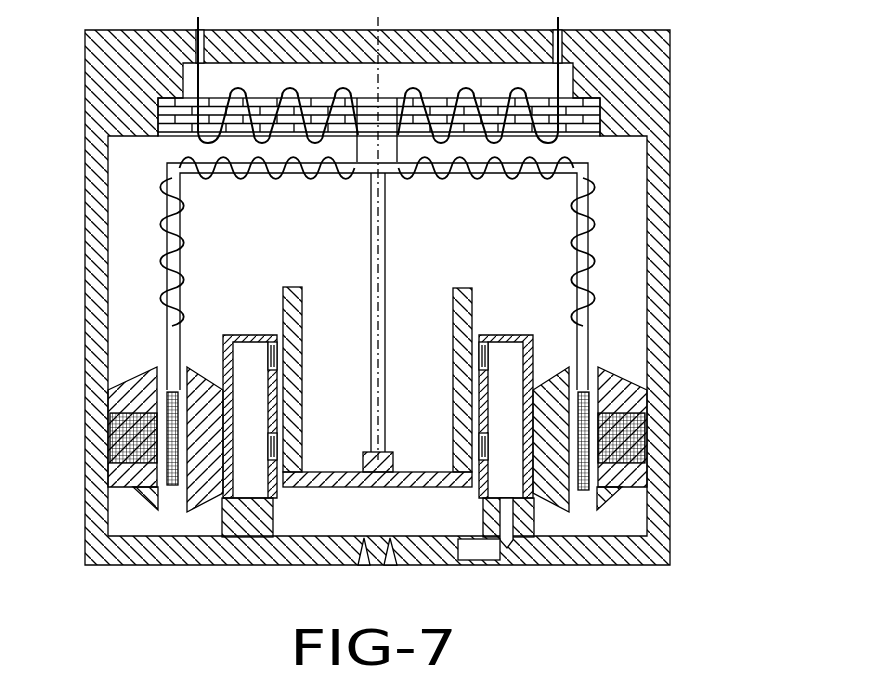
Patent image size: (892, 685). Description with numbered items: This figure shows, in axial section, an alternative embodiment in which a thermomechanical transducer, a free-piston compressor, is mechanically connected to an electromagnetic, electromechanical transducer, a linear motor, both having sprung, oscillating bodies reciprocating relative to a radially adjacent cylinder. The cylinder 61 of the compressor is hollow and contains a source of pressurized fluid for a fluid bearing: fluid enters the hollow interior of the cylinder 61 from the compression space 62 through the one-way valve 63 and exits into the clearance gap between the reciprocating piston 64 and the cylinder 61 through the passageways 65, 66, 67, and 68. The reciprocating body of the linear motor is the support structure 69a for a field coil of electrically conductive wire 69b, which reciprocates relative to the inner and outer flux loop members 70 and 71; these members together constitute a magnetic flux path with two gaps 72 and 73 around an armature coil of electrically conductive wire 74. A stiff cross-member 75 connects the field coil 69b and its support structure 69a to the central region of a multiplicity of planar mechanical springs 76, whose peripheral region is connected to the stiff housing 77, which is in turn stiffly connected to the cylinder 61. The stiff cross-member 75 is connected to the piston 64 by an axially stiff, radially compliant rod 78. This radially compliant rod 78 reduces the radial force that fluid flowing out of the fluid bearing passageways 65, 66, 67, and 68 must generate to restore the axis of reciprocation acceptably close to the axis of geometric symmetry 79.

The cylinder 61 is at (275, 510).
The compression space 62 is at (440, 527).
The one-way valve 63 is at (505, 530).
The reciprocating piston 64 is at (461, 300).
The passageway 65 is at (275, 460).
The passageway 66 is at (273, 362).
The passageway 67 is at (480, 460).
The passageway 68 is at (484, 365).
The support structure 69a is at (177, 263).
The field coil of electrically conductive wire 69b is at (173, 485).
The inner flux loop member 70 is at (200, 388).
The outer flux loop member 71 is at (147, 387).
The gap 72 is at (583, 510).
The gap 73 is at (597, 365).
The armature coil of electrically conductive wire 74 is at (130, 437).
The stiff cross-member 75 is at (229, 168).
The planar mechanical springs 76 is at (313, 117).
The stiff housing 77 is at (636, 116).
The axially stiff, radially compliant rod 78 is at (372, 266).
The axis of geometric symmetry 79 is at (382, 197).